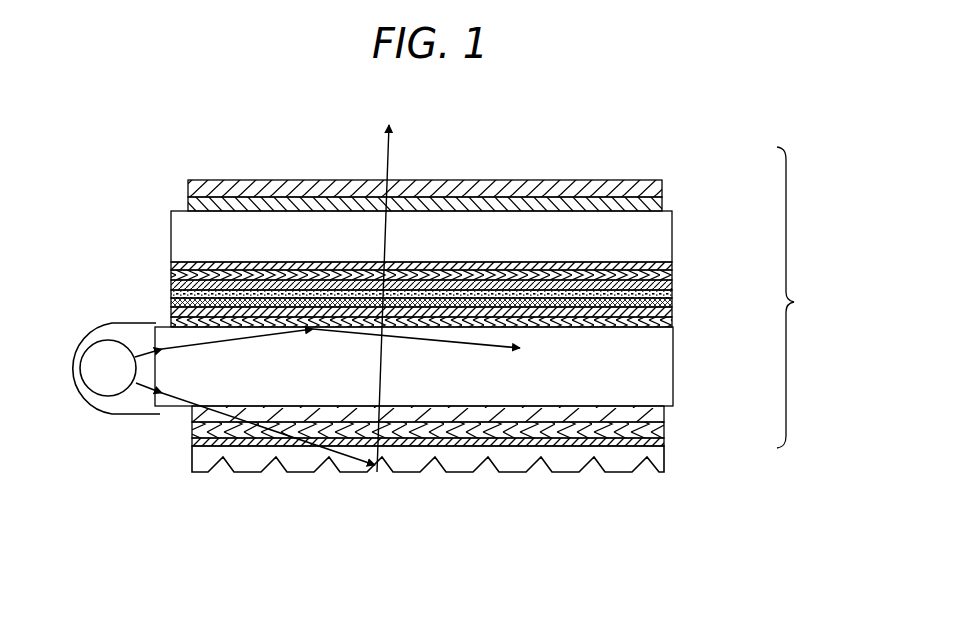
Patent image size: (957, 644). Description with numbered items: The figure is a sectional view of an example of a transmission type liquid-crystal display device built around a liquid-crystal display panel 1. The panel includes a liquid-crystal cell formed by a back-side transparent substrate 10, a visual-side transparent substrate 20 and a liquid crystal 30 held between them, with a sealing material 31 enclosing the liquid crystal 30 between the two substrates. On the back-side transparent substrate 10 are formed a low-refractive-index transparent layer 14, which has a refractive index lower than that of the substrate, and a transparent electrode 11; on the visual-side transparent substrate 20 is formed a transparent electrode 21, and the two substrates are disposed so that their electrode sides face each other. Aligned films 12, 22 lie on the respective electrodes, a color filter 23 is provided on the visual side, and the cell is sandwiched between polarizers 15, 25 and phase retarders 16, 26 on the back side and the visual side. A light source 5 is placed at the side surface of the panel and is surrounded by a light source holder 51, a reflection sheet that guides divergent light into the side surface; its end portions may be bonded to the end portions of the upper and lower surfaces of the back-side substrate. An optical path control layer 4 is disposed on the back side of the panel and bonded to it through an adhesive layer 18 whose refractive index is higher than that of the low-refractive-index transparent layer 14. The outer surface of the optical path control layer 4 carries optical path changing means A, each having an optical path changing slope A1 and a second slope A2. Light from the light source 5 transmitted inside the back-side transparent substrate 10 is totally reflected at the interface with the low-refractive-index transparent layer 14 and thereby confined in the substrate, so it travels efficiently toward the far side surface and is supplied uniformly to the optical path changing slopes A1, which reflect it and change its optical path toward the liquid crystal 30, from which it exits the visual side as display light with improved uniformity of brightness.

The liquid-crystal display panel 1 is at (793, 297).
The optical path control layer 4 is at (665, 466).
The light source 5 is at (107, 383).
The back-side transparent substrate 10 is at (674, 370).
The transparent electrode 11 is at (673, 312).
The aligned film 12 is at (673, 303).
The low-refractive-index transparent layer 14 is at (673, 322).
The polarizer 15 is at (665, 425).
The phase retarder 16 is at (665, 408).
The adhesive layer 18 is at (665, 440).
The visual-side transparent substrate 20 is at (673, 222).
The transparent electrode 21 is at (673, 272).
The aligned film 22 is at (673, 283).
The color filter 23 is at (673, 260).
The polarizer 25 is at (664, 178).
The phase retarder 26 is at (664, 196).
The liquid crystal 30 is at (545, 307).
The sealing material 31 is at (673, 293).
The light source holder 51 is at (121, 322).
The optical path changing means A is at (382, 474).
The optical path changing slope A1 is at (372, 472).
The steep slope A2 is at (388, 474).